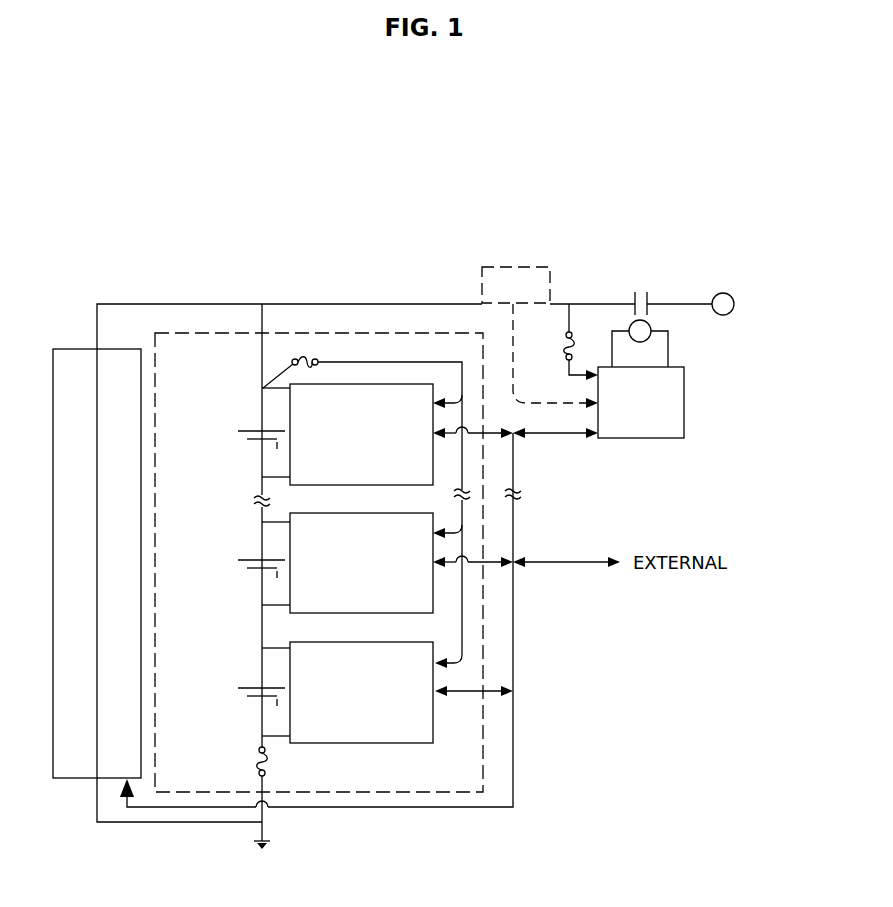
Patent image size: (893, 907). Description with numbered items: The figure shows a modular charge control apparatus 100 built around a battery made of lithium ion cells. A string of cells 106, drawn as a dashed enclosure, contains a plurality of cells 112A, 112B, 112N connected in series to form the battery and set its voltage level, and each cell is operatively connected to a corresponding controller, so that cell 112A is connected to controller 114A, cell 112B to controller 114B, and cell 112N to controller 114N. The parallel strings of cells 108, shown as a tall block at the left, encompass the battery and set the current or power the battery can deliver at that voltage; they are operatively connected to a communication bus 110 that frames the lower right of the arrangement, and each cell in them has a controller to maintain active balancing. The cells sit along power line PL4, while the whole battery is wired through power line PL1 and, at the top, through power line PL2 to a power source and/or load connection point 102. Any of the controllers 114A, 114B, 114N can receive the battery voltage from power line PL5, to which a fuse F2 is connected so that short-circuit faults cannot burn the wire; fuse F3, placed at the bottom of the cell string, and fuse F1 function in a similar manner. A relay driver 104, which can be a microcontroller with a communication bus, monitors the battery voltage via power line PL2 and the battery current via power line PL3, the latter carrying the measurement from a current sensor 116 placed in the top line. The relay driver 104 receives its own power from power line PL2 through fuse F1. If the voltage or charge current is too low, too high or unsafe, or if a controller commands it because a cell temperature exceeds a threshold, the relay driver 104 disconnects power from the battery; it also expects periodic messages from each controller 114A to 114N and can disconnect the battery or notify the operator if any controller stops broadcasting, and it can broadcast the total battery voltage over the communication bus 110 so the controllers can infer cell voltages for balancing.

The modular charge control apparatus 100 is at (160, 157).
The power source and/or load connection point 102 is at (732, 287).
The relay driver 104 is at (641, 379).
The string of cells 106 is at (282, 333).
The parallel strings of cells 108 is at (97, 563).
The communication bus 110 is at (515, 752).
The cell 112N is at (231, 432).
The cell 112B is at (232, 561).
The cell 112A is at (232, 689).
The controller 114N is at (361, 434).
The controller 114B is at (361, 563).
The controller 114A is at (361, 692).
The current sensor 116 is at (516, 285).
The power line PL1 is at (177, 305).
The power line PL2 is at (571, 330).
The power line PL3 is at (510, 348).
The power line PL4 is at (262, 318).
The power line PL5 is at (394, 503).
The fuse F1 is at (565, 343).
The fuse F2 is at (297, 359).
The fuse F3 is at (267, 768).